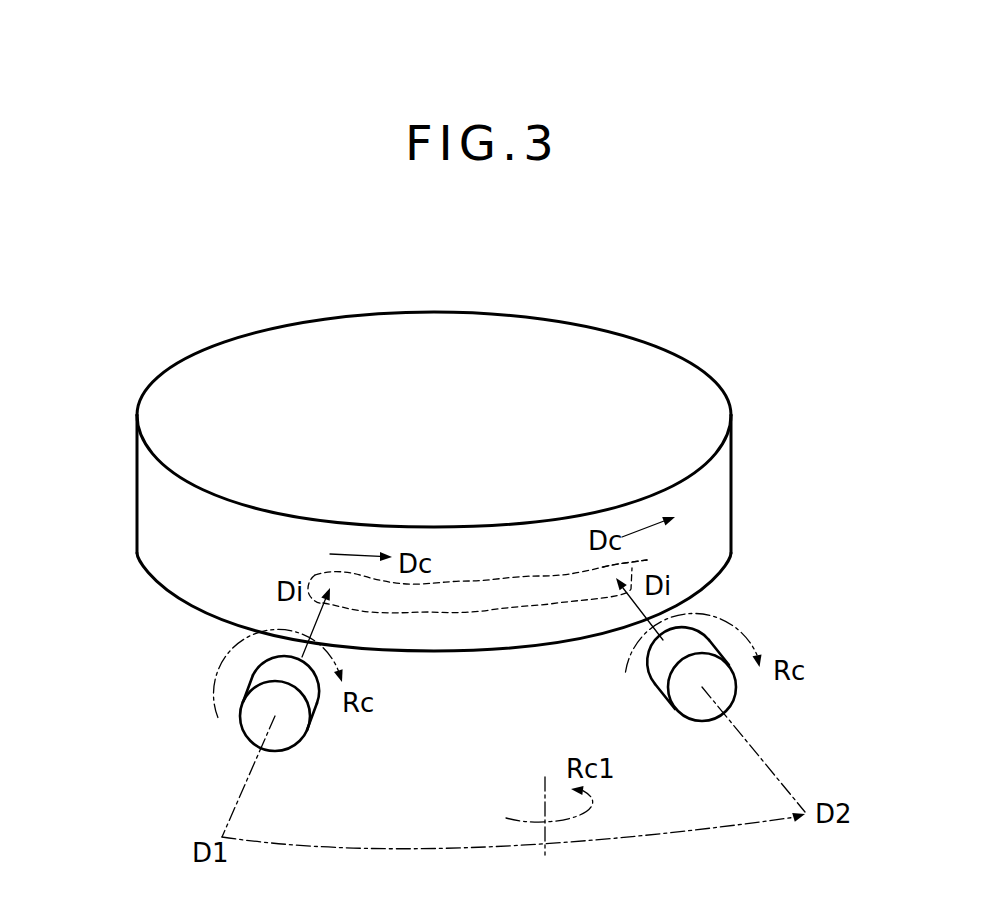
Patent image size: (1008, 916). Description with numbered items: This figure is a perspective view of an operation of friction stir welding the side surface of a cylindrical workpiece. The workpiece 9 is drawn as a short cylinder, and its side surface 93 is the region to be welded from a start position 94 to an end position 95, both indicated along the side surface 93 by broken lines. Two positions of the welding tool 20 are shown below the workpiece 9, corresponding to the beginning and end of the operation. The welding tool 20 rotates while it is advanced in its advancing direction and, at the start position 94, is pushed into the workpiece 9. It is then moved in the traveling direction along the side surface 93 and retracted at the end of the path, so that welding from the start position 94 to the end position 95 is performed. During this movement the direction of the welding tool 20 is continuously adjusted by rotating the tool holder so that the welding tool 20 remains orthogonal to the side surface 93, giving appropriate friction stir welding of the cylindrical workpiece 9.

The workpiece 9 is at (598, 372).
The side surface 93 is at (193, 527).
The start position 94 is at (314, 575).
The end position 95 is at (647, 560).
The welding tool 20 is at (228, 731).